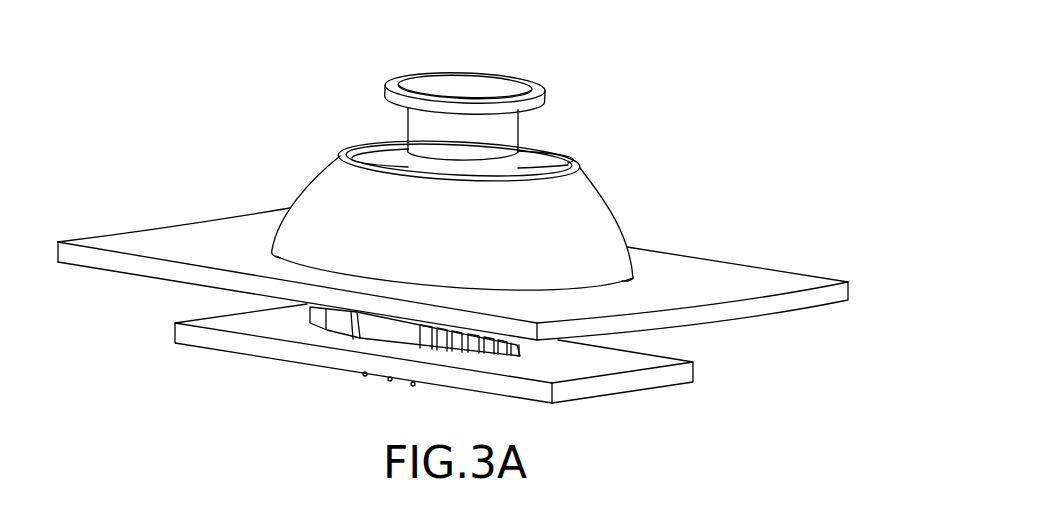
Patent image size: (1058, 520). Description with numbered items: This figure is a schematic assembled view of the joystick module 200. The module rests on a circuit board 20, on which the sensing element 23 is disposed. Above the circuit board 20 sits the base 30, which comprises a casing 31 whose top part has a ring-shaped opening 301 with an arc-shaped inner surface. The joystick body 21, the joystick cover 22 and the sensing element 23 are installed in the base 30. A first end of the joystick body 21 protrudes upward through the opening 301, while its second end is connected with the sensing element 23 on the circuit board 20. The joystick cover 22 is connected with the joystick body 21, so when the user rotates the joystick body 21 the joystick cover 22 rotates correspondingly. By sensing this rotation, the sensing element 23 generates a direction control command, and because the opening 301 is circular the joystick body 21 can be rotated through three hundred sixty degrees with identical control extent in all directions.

The joystick module 200 is at (673, 59).
The circuit board 20 is at (232, 340).
The joystick body 21 is at (482, 90).
The joystick cover 22 is at (523, 172).
The sensing element 23 is at (387, 333).
The base 30 is at (723, 278).
The casing 31 is at (597, 221).
The opening 301 is at (368, 158).